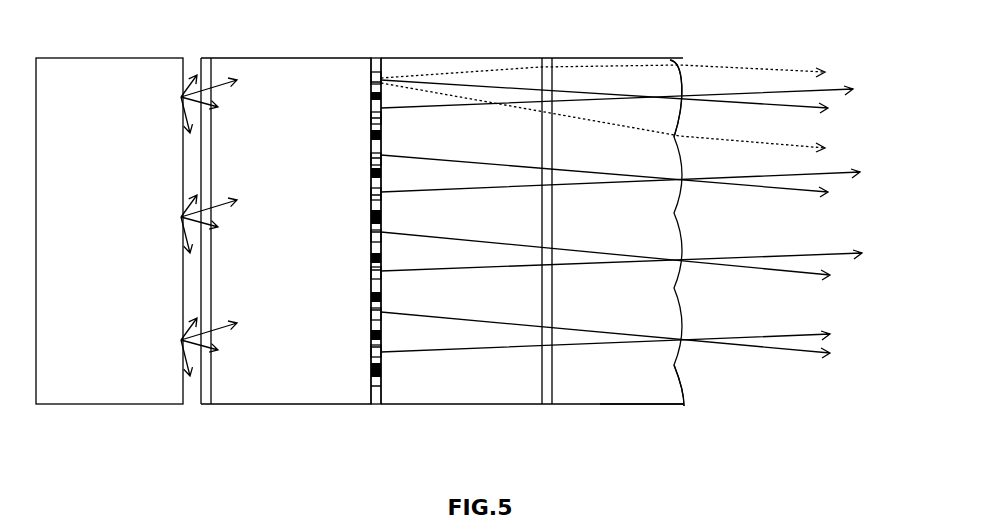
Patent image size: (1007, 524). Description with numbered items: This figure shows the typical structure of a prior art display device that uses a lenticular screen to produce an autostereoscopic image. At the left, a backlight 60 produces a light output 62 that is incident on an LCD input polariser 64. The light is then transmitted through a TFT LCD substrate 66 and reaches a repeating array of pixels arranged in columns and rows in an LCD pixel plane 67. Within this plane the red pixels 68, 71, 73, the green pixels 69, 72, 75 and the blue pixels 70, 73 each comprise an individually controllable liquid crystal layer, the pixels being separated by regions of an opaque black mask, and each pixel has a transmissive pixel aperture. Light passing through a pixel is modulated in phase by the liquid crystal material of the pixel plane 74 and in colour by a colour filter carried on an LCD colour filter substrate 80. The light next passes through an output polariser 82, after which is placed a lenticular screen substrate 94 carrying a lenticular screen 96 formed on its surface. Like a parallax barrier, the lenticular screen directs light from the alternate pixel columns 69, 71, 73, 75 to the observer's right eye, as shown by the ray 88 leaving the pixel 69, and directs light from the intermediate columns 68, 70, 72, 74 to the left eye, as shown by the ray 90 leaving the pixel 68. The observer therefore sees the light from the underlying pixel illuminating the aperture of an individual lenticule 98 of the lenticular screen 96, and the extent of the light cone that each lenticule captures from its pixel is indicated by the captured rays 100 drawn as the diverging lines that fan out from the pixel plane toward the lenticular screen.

The backlight 60 is at (113, 404).
The light output 62 is at (181, 97).
The LCD input polariser 64 is at (205, 404).
The TFT LCD substrate 66 is at (296, 404).
The LCD pixel plane 67 is at (378, 380).
The red pixel 68 is at (368, 76).
The green pixel 69 is at (368, 118).
The blue pixel 70 is at (368, 159).
The red pixel 71 is at (368, 194).
The green pixel 72 is at (368, 236).
The red pixel 73 is at (368, 273).
The pixel 74 is at (368, 314).
The green pixel 75 is at (368, 351).
The LCD colour filter substrate 80 is at (464, 404).
The output polariser 82 is at (551, 404).
The ray 88 is at (846, 87).
The ray 90 is at (768, 100).
The lenticular screen substrate 94 is at (608, 404).
The lenticular screen 96 is at (685, 406).
The lenticule 98 is at (672, 78).
The captured rays 100 is at (460, 95).